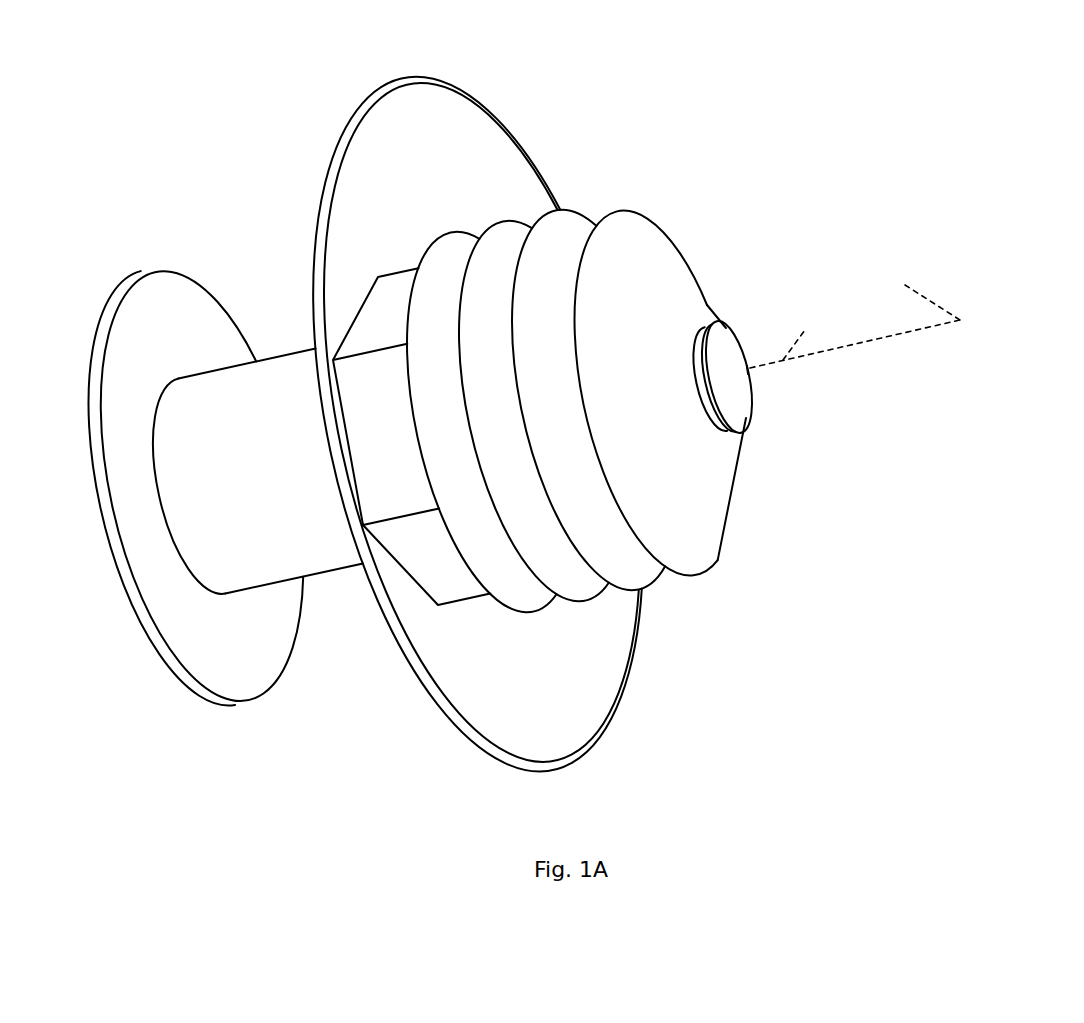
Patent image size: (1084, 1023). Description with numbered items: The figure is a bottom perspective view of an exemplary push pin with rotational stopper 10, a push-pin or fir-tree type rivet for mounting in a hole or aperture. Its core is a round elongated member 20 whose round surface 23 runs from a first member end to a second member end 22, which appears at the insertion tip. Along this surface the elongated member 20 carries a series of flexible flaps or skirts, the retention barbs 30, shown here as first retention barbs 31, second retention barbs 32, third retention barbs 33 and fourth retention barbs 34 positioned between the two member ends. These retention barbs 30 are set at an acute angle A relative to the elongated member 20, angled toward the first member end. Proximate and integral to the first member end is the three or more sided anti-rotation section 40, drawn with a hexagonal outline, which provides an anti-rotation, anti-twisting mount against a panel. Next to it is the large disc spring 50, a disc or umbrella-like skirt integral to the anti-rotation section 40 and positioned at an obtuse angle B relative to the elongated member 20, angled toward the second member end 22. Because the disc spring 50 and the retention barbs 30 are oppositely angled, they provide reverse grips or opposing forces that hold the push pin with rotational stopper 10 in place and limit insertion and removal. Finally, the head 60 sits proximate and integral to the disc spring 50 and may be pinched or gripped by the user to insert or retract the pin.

The push pin with rotational stopper 10 is at (502, 428).
The elongated member 20 is at (726, 322).
The second member end 22 is at (640, 365).
The round surface 23 is at (738, 421).
The retention barbs 30 is at (620, 368).
The first retention barbs 31 is at (453, 252).
The second retention barbs 32 is at (498, 244).
The third retention barbs 33 is at (558, 259).
The fourth retention barbs 34 is at (690, 268).
The three or more sided anti-rotation section 40 is at (378, 305).
The disc spring 50 is at (458, 143).
The head 60 is at (75, 667).
The angle A is at (905, 320).
The angle B is at (823, 344).